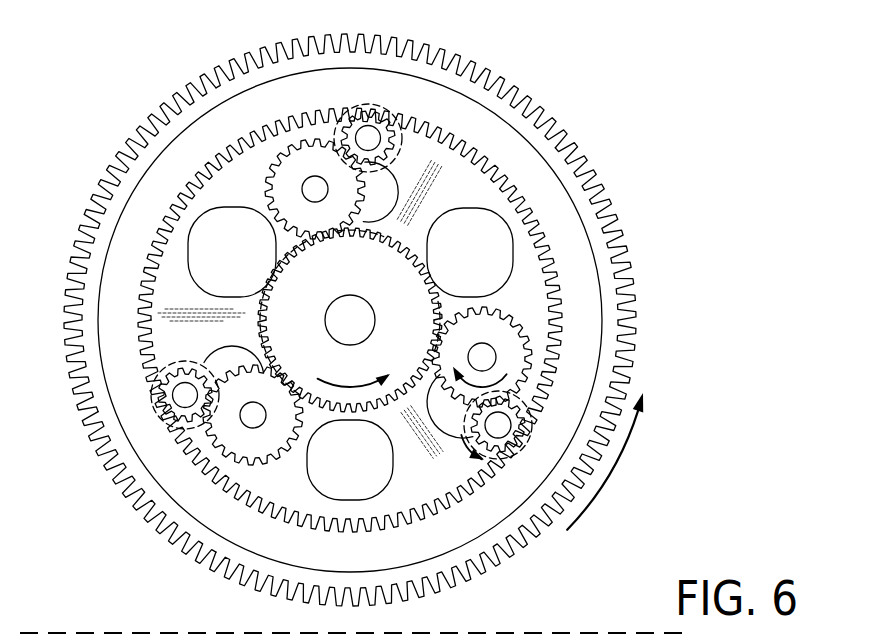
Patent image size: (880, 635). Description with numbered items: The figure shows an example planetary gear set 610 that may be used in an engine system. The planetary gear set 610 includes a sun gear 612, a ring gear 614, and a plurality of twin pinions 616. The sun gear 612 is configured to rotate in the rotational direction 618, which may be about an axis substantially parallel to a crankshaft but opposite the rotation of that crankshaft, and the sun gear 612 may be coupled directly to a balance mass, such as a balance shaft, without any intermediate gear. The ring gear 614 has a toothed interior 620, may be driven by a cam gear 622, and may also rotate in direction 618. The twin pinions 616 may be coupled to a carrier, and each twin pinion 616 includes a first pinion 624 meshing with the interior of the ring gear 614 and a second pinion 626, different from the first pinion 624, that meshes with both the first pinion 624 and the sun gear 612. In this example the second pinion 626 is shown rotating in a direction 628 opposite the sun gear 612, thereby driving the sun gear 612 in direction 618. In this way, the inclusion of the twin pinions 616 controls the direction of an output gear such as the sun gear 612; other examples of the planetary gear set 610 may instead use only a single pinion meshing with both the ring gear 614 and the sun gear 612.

The planetary gear set 610 is at (354, 317).
The sun gear 612 is at (411, 303).
The ring gear 614 is at (602, 342).
The twin pinions 616 is at (546, 373).
The rotational direction 618 is at (320, 379).
The toothed interior 620 is at (523, 203).
The cam gear 622 is at (620, 293).
The first pinion 624 is at (527, 425).
The second pinion 626 is at (506, 318).
The direction 628 is at (498, 372).